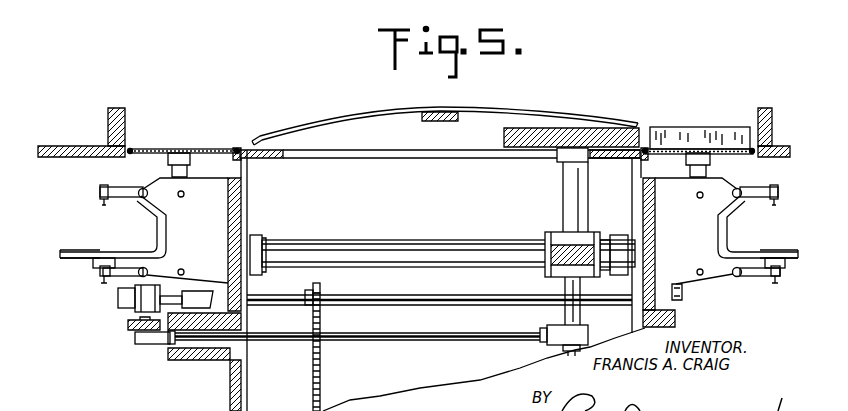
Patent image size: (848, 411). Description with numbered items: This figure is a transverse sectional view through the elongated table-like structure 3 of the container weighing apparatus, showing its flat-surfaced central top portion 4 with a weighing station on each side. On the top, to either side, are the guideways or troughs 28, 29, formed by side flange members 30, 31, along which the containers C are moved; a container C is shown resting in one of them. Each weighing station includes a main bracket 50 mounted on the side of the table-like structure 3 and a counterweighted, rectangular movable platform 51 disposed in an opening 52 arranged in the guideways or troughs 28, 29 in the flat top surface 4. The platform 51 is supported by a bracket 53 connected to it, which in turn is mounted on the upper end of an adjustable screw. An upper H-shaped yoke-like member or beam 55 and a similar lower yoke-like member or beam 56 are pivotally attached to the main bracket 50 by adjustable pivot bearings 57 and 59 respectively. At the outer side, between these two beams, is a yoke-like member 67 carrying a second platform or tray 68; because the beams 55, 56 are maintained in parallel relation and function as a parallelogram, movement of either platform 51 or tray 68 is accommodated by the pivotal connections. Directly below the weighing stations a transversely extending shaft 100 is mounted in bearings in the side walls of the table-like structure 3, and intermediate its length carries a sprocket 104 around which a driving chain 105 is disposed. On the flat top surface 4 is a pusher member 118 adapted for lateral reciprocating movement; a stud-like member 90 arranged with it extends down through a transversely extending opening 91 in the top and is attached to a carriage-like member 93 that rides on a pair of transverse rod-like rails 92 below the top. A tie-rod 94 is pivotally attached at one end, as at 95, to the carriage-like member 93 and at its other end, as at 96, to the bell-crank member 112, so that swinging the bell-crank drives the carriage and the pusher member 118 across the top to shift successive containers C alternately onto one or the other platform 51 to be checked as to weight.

The table-like structure 3 is at (247, 341).
The flat-surfaced central top portion 4 is at (247, 150).
The guideway or trough 28 is at (131, 143).
The guideway or trough 29 is at (755, 128).
The side flange member 30 is at (108, 108).
The side flange member 31 is at (768, 108).
The main bracket 50 is at (680, 290).
The movable platform 51 is at (175, 149).
The opening 52 is at (236, 147).
The bracket 53 is at (189, 160).
The upper H-shaped yoke-like member or beam 55 is at (118, 189).
The lower H-shaped yoke-like member or beam 56 is at (125, 262).
The adjustable pivot bearing 57 is at (145, 189).
The adjustable pivot bearing 59 is at (150, 271).
The yoke-like member 67 is at (166, 232).
The second platform or tray 68 is at (76, 240).
The stud-like member 90 is at (568, 187).
The transversely extending opening 91 is at (328, 153).
The rod-like rails 92 is at (385, 252).
The carriage-like member 93 is at (535, 244).
The tie-rod 94 is at (392, 341).
The pivot 95 is at (545, 326).
The pivot 96 is at (140, 345).
The transversely extending shaft 100 is at (416, 300).
The sprocket 104 is at (320, 288).
The driving chain 105 is at (320, 378).
The bell-crank member 112 is at (128, 323).
The pusher member 118 is at (535, 135).
The container C is at (692, 140).